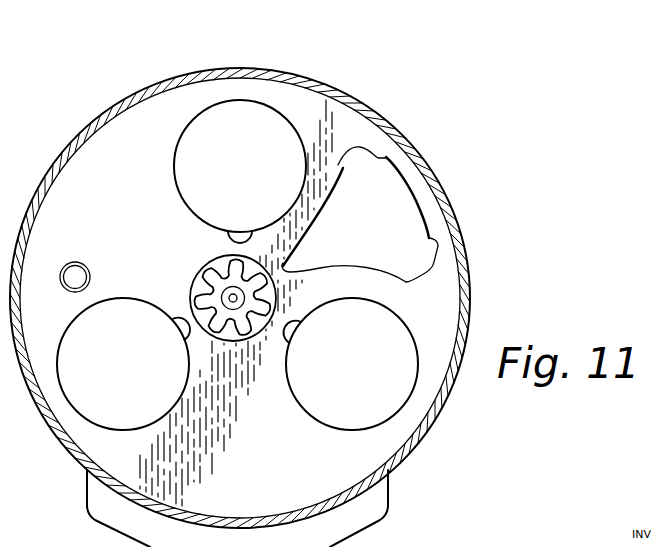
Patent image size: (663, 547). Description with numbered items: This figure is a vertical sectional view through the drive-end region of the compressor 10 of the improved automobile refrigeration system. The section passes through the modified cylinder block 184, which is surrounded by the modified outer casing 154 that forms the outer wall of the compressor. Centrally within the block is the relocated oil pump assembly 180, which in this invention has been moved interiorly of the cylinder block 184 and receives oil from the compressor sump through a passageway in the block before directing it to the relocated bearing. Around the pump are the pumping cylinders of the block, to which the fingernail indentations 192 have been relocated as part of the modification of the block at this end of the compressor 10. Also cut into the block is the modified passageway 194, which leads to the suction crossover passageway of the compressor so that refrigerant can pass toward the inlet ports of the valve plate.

The compressor unit 10 is at (93, 118).
The outer casing 154 is at (282, 72).
The cylinder block 184 is at (145, 117).
The passageway 194 is at (345, 168).
The oil pump assembly 180 is at (215, 258).
The fingernail indentations 192 is at (243, 229).